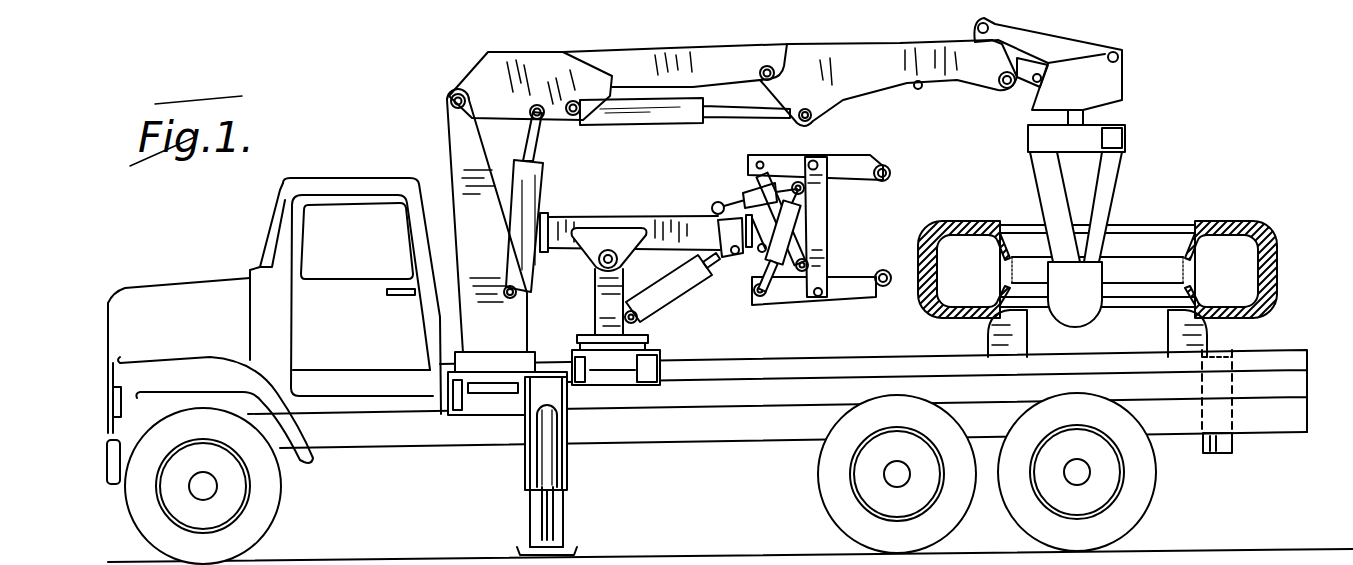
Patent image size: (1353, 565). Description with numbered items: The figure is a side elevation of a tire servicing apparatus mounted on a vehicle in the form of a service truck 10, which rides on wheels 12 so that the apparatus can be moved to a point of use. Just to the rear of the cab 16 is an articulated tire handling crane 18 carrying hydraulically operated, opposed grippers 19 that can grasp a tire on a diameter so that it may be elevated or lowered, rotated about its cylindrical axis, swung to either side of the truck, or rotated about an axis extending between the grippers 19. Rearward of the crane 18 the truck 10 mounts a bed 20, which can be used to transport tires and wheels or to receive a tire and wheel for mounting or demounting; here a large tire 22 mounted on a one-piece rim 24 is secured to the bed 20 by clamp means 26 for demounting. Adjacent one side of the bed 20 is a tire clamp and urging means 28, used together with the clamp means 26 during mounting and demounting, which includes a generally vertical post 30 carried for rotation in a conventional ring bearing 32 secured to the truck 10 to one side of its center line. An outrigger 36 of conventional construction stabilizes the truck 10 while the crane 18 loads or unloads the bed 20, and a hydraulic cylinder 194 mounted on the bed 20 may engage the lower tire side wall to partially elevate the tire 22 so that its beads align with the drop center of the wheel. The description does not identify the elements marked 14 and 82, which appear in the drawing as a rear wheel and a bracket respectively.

The service truck 10 is at (401, 437).
The wheels 12 is at (273, 500).
The rear wheels 14 is at (993, 517).
The cab 16 is at (342, 183).
The tire handling crane 18 is at (480, 70).
The grippers 19 is at (1047, 180).
The bed 20 is at (1282, 350).
The tire 22 is at (1278, 245).
The one-piece rim 24 is at (1150, 242).
The clamp means 26 is at (1187, 331).
The tire clamp and urging means 28 is at (668, 208).
The post 30 is at (612, 297).
The ring bearing 32 is at (650, 340).
The outriggers 36 is at (563, 465).
The pivot bracket 82 is at (600, 218).
The hydraulic cylinders 194 is at (1232, 445).